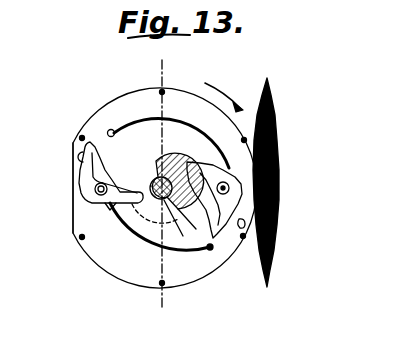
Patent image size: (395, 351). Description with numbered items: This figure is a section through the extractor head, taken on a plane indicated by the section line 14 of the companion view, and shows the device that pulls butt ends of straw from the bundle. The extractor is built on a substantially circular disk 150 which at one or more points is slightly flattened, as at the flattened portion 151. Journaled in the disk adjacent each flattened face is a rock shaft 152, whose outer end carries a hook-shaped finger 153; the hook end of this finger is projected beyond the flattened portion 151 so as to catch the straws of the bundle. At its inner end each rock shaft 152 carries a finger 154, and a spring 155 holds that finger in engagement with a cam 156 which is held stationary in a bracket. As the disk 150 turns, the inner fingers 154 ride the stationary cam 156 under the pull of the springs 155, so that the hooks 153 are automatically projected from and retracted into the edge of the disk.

The section line 14- 14 is at (178, 60).
The circular disk 150 is at (165, 178).
The flattened portion 151 is at (73, 195).
The rock shaft 152 is at (100, 193).
The hook-shaped finger 153 is at (276, 153).
The finger 154 is at (138, 190).
The spring 155 is at (203, 120).
The cam 156 is at (187, 217).